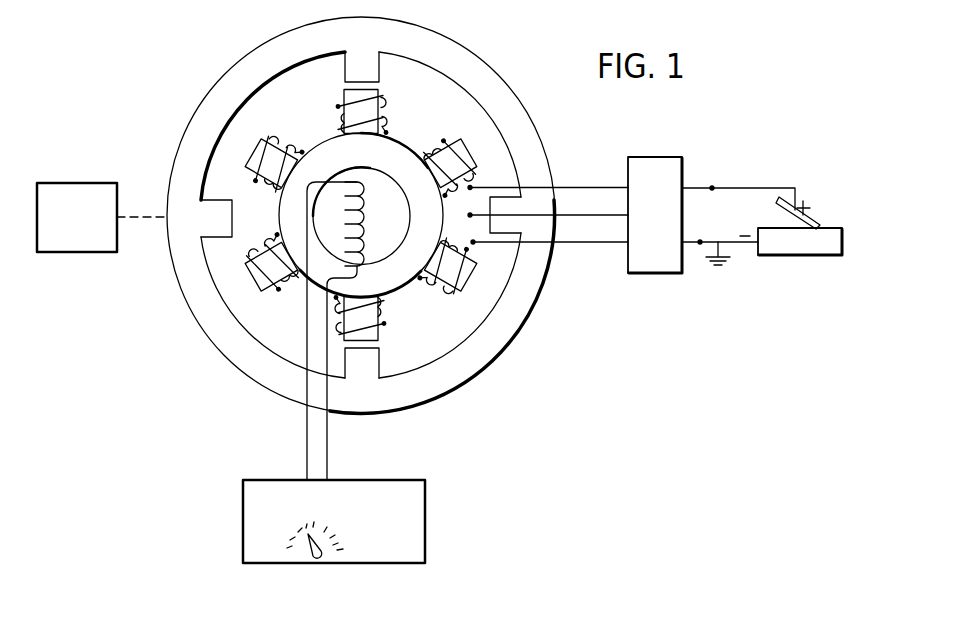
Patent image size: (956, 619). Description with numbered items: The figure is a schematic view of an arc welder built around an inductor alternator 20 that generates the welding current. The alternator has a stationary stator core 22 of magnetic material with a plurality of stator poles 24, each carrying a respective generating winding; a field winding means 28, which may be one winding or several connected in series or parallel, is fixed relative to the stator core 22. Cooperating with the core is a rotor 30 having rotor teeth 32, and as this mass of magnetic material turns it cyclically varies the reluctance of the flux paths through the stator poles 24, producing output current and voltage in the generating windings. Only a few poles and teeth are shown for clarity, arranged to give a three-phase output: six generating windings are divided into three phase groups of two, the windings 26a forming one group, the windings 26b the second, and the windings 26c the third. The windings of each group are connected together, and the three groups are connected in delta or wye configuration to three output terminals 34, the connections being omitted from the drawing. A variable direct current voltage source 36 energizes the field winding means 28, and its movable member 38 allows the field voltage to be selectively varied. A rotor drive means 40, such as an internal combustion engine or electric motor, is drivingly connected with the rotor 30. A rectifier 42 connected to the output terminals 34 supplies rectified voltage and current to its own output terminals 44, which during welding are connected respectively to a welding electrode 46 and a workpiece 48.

The inductor alternator 20 is at (483, 47).
The stator core 22 is at (390, 149).
The stator poles 24 is at (376, 97).
The generating windings of the first phase group 26a is at (284, 149).
The generating windings of the second phase group 26b is at (469, 151).
The generating windings of the third phase group 26c is at (382, 120).
The field winding means 28 is at (361, 224).
The rotor 30 is at (522, 133).
The rotor teeth 32 is at (360, 72).
The output terminals 34 is at (473, 241).
The variable direct current voltage source 36 is at (425, 508).
The movable member 38 is at (309, 546).
The rotor drive means 40 is at (75, 183).
The rectifier 42 is at (646, 160).
The rectifier output terminals 44 is at (712, 188).
The welding electrode 46 is at (810, 222).
The workpiece 48 is at (807, 245).